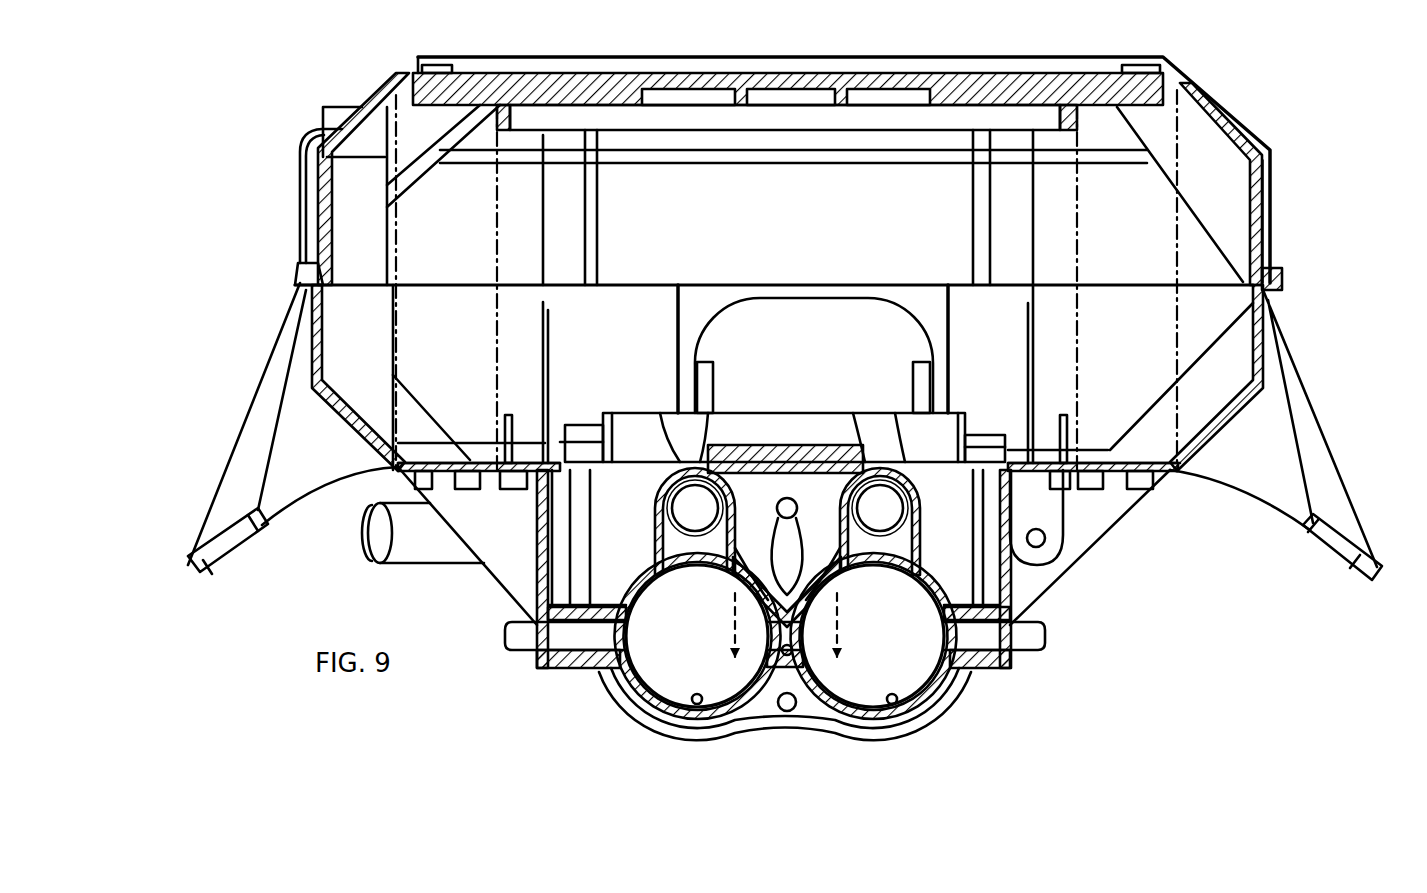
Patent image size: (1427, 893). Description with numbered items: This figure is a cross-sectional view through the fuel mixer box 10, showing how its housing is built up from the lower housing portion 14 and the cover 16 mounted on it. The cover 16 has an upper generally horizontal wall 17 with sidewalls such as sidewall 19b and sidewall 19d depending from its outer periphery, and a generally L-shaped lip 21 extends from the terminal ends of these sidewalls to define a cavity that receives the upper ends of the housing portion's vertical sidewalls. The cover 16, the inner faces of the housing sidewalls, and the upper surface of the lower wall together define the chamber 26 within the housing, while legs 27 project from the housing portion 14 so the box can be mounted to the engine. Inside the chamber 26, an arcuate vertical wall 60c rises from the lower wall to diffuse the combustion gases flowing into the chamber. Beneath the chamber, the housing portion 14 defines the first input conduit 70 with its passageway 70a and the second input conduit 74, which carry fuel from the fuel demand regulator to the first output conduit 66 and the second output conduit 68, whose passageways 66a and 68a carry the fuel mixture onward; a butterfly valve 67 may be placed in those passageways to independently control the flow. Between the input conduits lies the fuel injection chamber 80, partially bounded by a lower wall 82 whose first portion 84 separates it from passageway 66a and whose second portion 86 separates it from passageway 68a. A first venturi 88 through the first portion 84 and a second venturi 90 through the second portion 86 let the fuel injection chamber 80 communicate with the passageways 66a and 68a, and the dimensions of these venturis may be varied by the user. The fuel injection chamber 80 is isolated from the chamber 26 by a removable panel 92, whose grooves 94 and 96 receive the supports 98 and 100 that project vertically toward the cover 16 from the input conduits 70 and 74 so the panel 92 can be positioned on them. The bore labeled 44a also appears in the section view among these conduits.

The fuel mixer box 10 is at (1120, 556).
The housing portion 14 is at (228, 466).
The cover 16 is at (1214, 120).
The upper generally horizontal wall 17 is at (1012, 73).
The sidewall 19b is at (1260, 200).
The sidewall 19d is at (304, 195).
The L-shaped lip 21 is at (1283, 280).
The chamber 26 is at (779, 289).
The legs 27 is at (1343, 480).
The left valve bore 44a is at (680, 514).
The vertical wall 60c is at (890, 320).
The first output conduit 66 is at (855, 714).
The passageway 66a is at (893, 706).
The butterfly valve 67 is at (977, 678).
The second output conduit 68 is at (650, 722).
The passageway 68a is at (697, 706).
The first input conduit 70 is at (922, 485).
The passageway 70a is at (892, 520).
The second input conduit 74 is at (660, 490).
The fuel injection chamber 80 is at (780, 487).
The lower wall 82 is at (787, 711).
The first portion 84 is at (818, 545).
The second portion 86 is at (753, 545).
The first venturi 88 is at (845, 578).
The second venturi 90 is at (733, 580).
The removable panel 92 is at (798, 440).
The groove 94 is at (895, 440).
The groove 96 is at (712, 432).
The support 98 is at (838, 470).
The support 100 is at (670, 440).